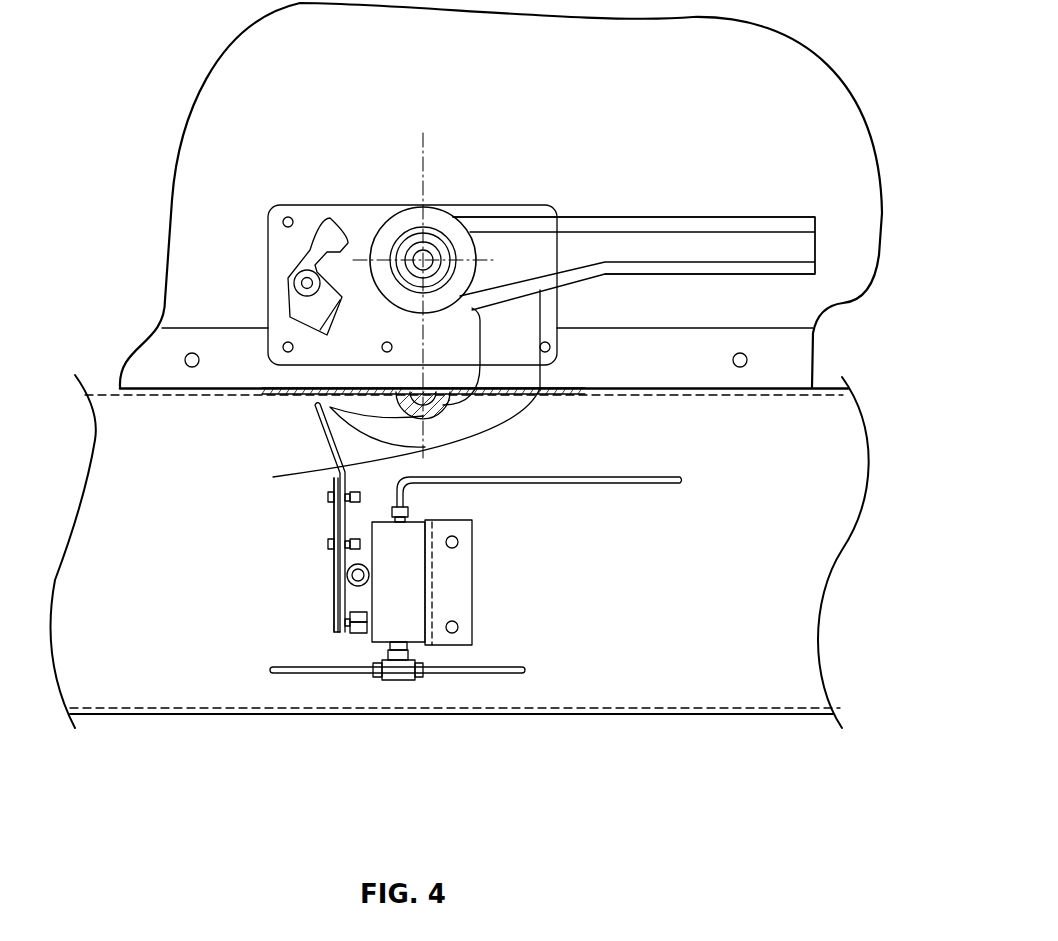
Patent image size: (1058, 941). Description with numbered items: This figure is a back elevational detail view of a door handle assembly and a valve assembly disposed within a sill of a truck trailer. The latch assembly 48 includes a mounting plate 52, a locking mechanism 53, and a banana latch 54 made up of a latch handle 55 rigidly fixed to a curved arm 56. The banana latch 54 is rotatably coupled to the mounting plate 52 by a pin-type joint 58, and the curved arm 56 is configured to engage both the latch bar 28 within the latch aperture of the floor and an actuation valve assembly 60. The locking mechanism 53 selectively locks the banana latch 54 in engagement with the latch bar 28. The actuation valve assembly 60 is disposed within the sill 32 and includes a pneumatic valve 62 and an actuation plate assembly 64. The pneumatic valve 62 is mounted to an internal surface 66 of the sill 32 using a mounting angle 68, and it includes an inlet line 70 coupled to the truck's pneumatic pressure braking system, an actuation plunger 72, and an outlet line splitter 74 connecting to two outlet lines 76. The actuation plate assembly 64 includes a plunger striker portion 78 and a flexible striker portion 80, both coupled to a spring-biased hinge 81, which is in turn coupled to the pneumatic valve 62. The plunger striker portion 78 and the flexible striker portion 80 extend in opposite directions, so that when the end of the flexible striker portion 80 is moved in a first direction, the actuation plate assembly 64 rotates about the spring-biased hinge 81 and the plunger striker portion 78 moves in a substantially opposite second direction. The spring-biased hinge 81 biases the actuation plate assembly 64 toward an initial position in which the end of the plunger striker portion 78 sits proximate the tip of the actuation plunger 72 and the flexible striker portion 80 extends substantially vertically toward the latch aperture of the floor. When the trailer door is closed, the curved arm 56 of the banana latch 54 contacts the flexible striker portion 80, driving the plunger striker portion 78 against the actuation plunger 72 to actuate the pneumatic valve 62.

The latch bar 28 is at (300, 473).
The sill 32 is at (866, 557).
The latch assembly 48 is at (466, 154).
The mounting plate 52 is at (273, 242).
The locking mechanism 53 is at (315, 247).
The banana latch 54 is at (585, 192).
The latch handle 55 is at (725, 245).
The curved arm 56 is at (498, 418).
The pin-type joint 58 is at (420, 237).
The actuation valve assembly 60 is at (476, 632).
The pneumatic valve 62 is at (400, 558).
The actuation plate assembly 64 is at (283, 619).
The internal surface 66 is at (780, 602).
The mounting angle 68 is at (465, 627).
The inlet line 70 is at (427, 485).
The actuation plunger 72 is at (340, 622).
The outlet line splitter 74 is at (398, 680).
The outlet lines 76 is at (333, 673).
The plunger striker portion 78 is at (338, 602).
The flexible striker portion 80 is at (313, 407).
The spring-biased hinge 81 is at (350, 570).